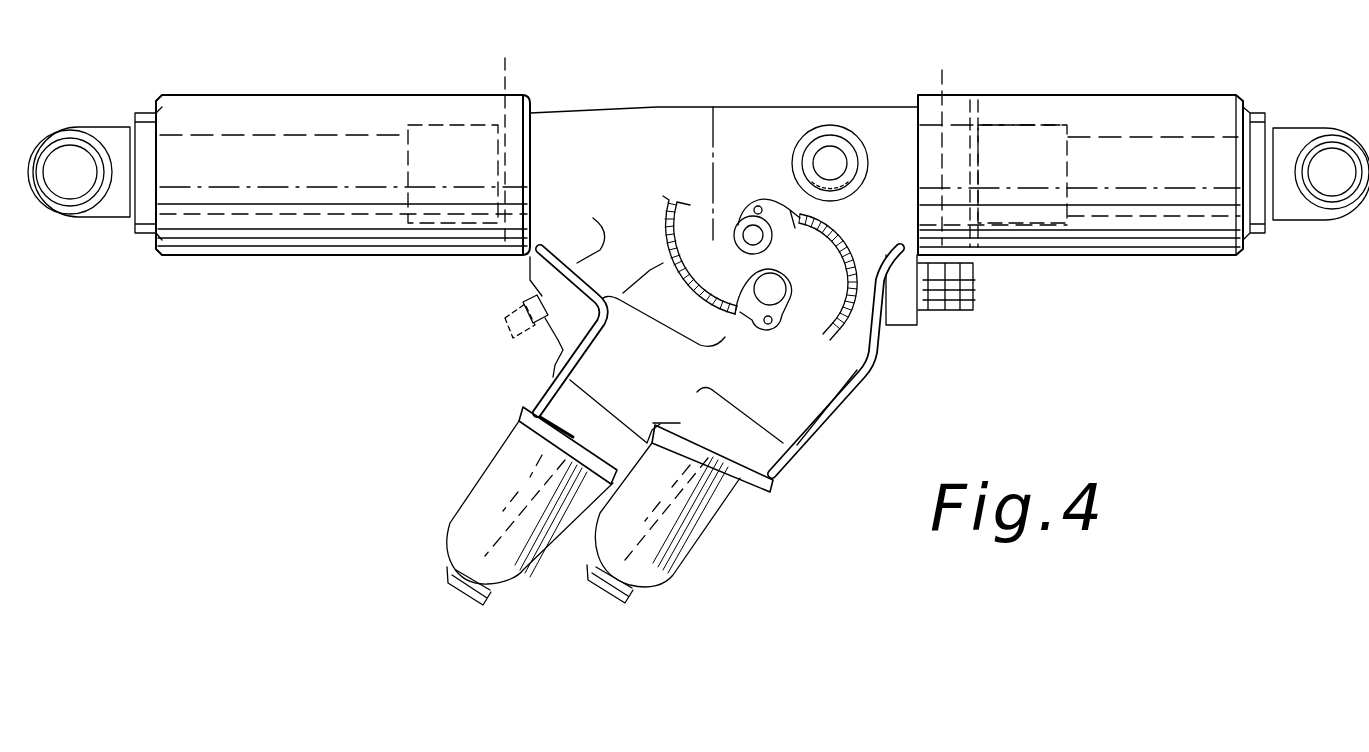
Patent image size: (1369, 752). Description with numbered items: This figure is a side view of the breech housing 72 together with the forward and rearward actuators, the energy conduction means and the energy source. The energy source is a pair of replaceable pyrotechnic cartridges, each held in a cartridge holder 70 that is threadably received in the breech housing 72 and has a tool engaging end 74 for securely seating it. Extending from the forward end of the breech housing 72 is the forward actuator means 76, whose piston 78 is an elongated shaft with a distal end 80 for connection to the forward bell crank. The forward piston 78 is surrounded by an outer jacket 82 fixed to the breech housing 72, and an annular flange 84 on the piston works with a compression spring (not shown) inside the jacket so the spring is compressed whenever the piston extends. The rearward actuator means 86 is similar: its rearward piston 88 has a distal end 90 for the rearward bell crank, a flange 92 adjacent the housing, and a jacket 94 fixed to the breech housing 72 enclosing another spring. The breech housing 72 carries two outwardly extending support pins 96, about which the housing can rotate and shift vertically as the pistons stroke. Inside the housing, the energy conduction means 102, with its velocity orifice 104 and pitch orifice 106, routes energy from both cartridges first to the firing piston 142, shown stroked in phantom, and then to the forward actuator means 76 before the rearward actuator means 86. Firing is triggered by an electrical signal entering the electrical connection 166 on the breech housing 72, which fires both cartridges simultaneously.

The cartridge holder 70 is at (465, 517).
The breech housing 72 is at (655, 105).
The tool engaging end 74 is at (460, 596).
The forward actuator means 76 is at (1150, 95).
The piston 78 is at (942, 72).
The distal end 80 is at (1338, 130).
The outer jacket 82 is at (1124, 236).
The annular flange 84 is at (972, 108).
The rearward actuator means 86 is at (326, 91).
The rearward piston 88 is at (450, 135).
The distal end 90 is at (70, 126).
The flange 92 is at (505, 137).
The jacket 94 is at (312, 238).
The support pin 96 is at (830, 140).
The energy conduction means 102 is at (783, 310).
The velocity orifice 104 is at (779, 284).
The pitch orifice 106 is at (748, 228).
The firing piston 142 is at (512, 314).
The electrical connection 166 is at (956, 314).